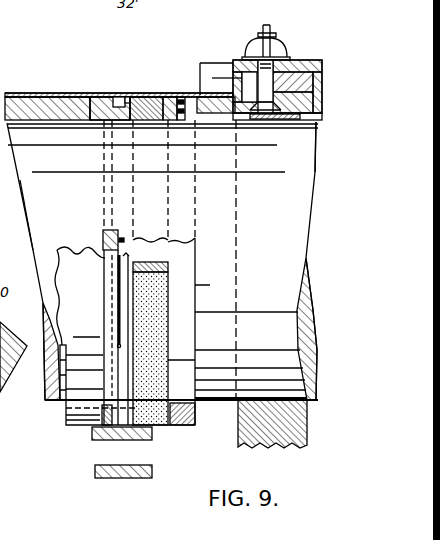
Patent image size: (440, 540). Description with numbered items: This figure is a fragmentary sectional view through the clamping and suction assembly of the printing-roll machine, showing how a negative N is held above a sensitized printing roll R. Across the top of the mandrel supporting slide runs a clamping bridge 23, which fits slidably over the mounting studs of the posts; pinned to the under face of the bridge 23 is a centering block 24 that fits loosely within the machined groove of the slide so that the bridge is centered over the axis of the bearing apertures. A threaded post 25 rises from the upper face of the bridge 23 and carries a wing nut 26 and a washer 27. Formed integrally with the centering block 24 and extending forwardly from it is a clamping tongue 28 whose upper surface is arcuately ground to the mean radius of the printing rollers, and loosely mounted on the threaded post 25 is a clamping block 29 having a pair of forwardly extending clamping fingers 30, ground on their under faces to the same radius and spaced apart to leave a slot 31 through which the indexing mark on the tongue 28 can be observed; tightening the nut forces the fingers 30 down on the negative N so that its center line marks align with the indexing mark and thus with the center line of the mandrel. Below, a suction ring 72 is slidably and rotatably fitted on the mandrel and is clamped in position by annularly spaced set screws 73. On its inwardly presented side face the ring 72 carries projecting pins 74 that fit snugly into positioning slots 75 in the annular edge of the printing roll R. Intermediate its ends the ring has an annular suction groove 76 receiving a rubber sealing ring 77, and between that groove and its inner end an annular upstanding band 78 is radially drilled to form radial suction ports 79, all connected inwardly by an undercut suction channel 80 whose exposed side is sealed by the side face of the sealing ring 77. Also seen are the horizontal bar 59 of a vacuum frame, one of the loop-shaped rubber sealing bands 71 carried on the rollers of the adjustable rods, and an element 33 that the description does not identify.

The sensitized printing roll R is at (33, 113).
The negative N is at (58, 97).
The clamping bridge 23 is at (242, 85).
The centering block 24 is at (300, 160).
The threaded post 25 is at (273, 67).
The wing nut 26 is at (268, 60).
The washer 27 is at (247, 57).
The clamping tongue 28 is at (212, 113).
The clamping block 29 is at (307, 62).
The clamping finger 30 is at (206, 63).
The slot 31 is at (212, 78).
The wall 33 is at (42, 213).
The horizontal bar 59 is at (6, 343).
The loop-shaped rubber sealing band 71 is at (95, 467).
The suction ring 72 is at (152, 117).
The set screw 73 is at (180, 121).
The projecting pin 74 is at (97, 122).
The positioning slot 75 is at (98, 110).
The annular suction groove 76 is at (134, 115).
The rubber sealing ring 77 is at (146, 97).
The annular upstanding band 78 is at (118, 299).
The radial suction port 79 is at (107, 97).
The suction channel 80 is at (121, 100).